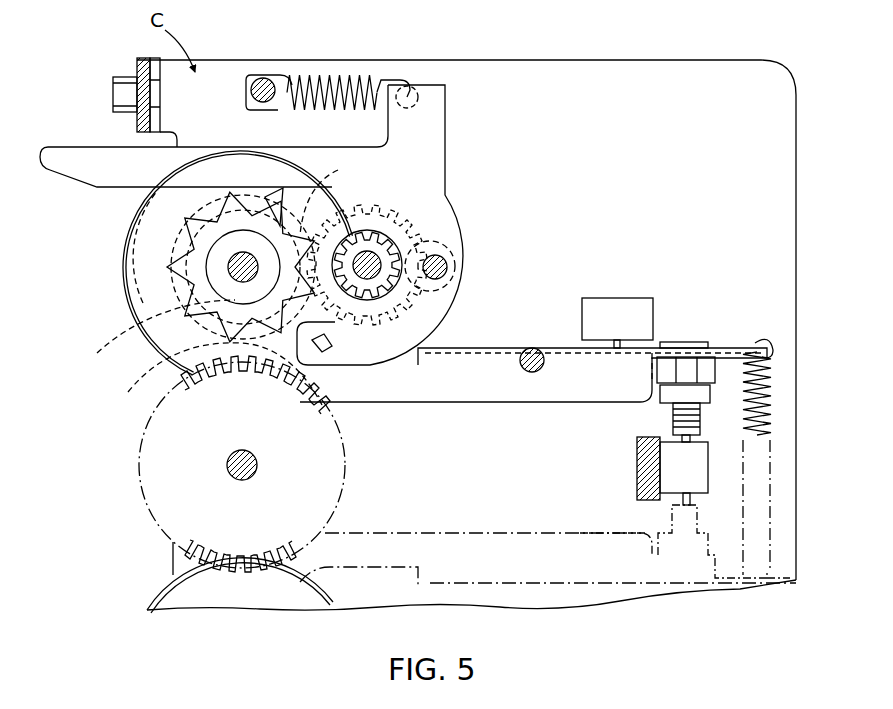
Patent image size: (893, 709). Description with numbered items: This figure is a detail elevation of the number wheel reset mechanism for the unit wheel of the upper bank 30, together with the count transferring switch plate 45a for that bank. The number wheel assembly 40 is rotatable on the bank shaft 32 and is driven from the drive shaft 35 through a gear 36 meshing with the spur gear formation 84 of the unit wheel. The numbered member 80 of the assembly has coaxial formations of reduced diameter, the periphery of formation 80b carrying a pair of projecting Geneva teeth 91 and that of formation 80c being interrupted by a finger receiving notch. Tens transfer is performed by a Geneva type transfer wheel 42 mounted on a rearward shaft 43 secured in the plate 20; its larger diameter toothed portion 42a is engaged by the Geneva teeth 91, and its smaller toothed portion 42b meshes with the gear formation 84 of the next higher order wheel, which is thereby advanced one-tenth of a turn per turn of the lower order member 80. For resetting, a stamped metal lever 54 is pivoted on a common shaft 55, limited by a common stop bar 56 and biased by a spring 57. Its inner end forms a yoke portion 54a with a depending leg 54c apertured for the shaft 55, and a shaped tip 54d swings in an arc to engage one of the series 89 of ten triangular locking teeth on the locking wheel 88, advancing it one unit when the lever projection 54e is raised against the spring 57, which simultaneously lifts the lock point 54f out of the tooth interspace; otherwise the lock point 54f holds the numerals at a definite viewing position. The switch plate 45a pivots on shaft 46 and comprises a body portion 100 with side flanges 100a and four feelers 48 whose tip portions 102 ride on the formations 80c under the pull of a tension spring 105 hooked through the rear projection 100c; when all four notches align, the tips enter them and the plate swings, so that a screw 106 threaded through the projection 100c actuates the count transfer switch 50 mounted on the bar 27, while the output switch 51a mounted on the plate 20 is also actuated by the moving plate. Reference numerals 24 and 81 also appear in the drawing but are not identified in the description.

The plate 20 is at (665, 75).
The mounting bracket 24 is at (137, 68).
The bar 27 is at (637, 482).
The upper bank 30 is at (90, 383).
The shaft 32 is at (242, 258).
The drive shaft 35 is at (233, 477).
The gear 36 is at (143, 440).
The number wheel assembly 40 is at (180, 570).
The tens transfer wheel 42 is at (385, 248).
The larger diameter toothed portion 42a is at (400, 256).
The smaller diameter toothed portion 42b is at (380, 240).
The rearward shaft 43 is at (371, 258).
The count transfer switch plate 45a is at (553, 406).
The shaft 46 is at (520, 368).
The fingers or feelers 48 is at (312, 407).
The count transfer switch 50 is at (708, 475).
The output or control signal switch 51a is at (618, 305).
The lever 54 is at (450, 121).
The yoke portion 54a is at (440, 85).
The depending leg 54c is at (448, 292).
The shaped tip 54d is at (320, 350).
The lever projection 54e is at (100, 152).
The lock point 54f is at (268, 198).
The common shaft 55 is at (447, 265).
The common stop bar 56 is at (259, 78).
The biasing spring 57 is at (350, 75).
The numbered member 80 is at (128, 301).
The reduced diameter formation 80b is at (140, 248).
The reduced diameter formation 80c is at (140, 343).
The cam edge 81 is at (131, 266).
The spur gear formation 84 is at (190, 215).
The locking wheel 88 is at (178, 237).
The locking teeth 89 is at (187, 220).
The Geneva teeth 91 is at (332, 193).
The body portion 100 is at (468, 347).
The side flanges 100a is at (410, 403).
The rear projection 100c is at (726, 347).
The tip portions 102 is at (207, 374).
The tension spring 105 is at (778, 378).
The screw 106 is at (672, 414).